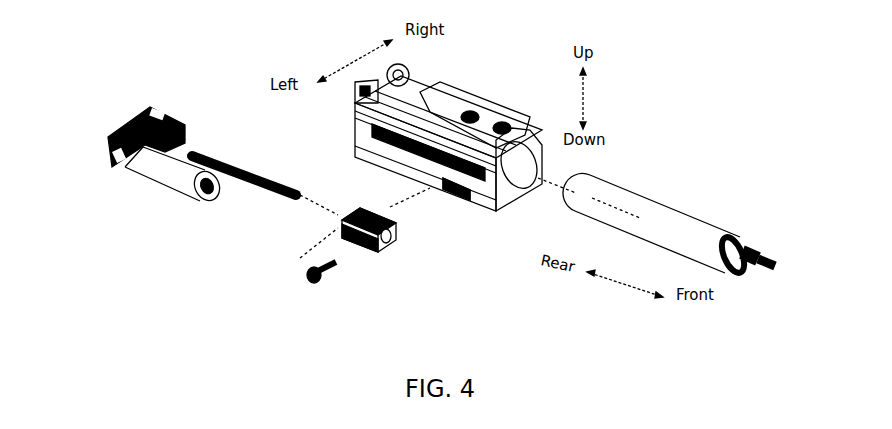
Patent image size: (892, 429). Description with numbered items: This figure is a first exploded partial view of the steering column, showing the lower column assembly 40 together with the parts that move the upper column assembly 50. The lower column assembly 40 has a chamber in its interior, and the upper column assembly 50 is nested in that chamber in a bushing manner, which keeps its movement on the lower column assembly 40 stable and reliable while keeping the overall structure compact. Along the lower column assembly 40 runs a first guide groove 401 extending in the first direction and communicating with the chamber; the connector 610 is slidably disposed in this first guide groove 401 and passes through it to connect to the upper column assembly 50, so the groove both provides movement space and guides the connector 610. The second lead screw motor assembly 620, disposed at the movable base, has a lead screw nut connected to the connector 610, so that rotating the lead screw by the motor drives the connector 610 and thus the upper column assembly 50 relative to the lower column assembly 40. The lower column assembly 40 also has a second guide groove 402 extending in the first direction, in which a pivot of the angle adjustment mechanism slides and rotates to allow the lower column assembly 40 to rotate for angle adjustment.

The lower column assembly 40 is at (428, 102).
The first guide groove 401 is at (405, 152).
The second guide groove 402 is at (463, 196).
The upper column assembly 50 is at (667, 222).
The connector 610 is at (345, 223).
The second lead screw motor assembly 620 is at (165, 177).